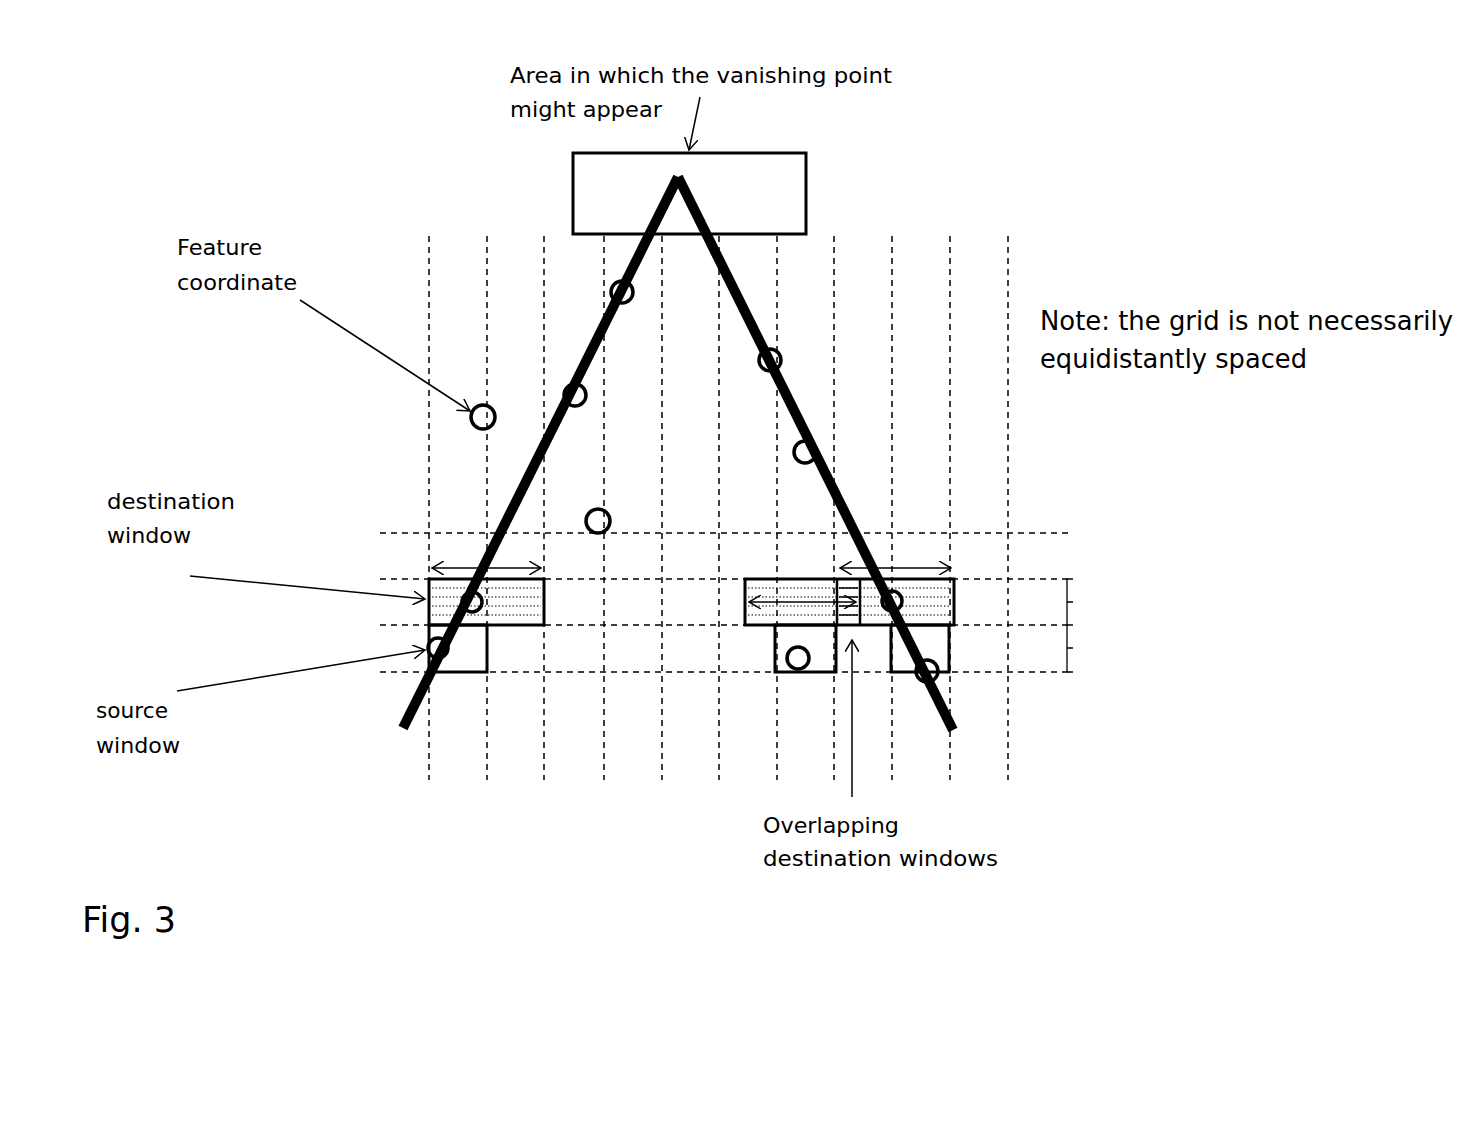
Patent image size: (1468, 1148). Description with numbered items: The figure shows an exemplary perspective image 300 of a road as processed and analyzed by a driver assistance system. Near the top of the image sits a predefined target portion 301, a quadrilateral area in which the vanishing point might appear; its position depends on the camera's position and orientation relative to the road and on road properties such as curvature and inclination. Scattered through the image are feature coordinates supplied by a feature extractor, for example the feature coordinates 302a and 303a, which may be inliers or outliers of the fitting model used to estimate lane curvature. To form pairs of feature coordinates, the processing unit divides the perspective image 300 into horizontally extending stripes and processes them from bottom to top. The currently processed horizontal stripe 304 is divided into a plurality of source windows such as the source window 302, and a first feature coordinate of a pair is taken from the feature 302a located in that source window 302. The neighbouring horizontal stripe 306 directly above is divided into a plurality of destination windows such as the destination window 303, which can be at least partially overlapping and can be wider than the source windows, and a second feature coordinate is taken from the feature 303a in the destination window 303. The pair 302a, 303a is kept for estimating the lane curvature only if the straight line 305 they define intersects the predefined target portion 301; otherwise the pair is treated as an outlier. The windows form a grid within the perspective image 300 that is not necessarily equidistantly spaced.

The perspective image 300 is at (246, 158).
The predefined target portion 301 is at (806, 190).
The source window 302 is at (915, 676).
The feature coordinate 302a is at (938, 676).
The destination window 303 is at (954, 608).
The feature coordinate 303a is at (954, 590).
The currently processed horizontal stripe 304 is at (1098, 648).
The straight line 305 is at (838, 490).
The neighbouring horizontal stripe 306 is at (1098, 602).